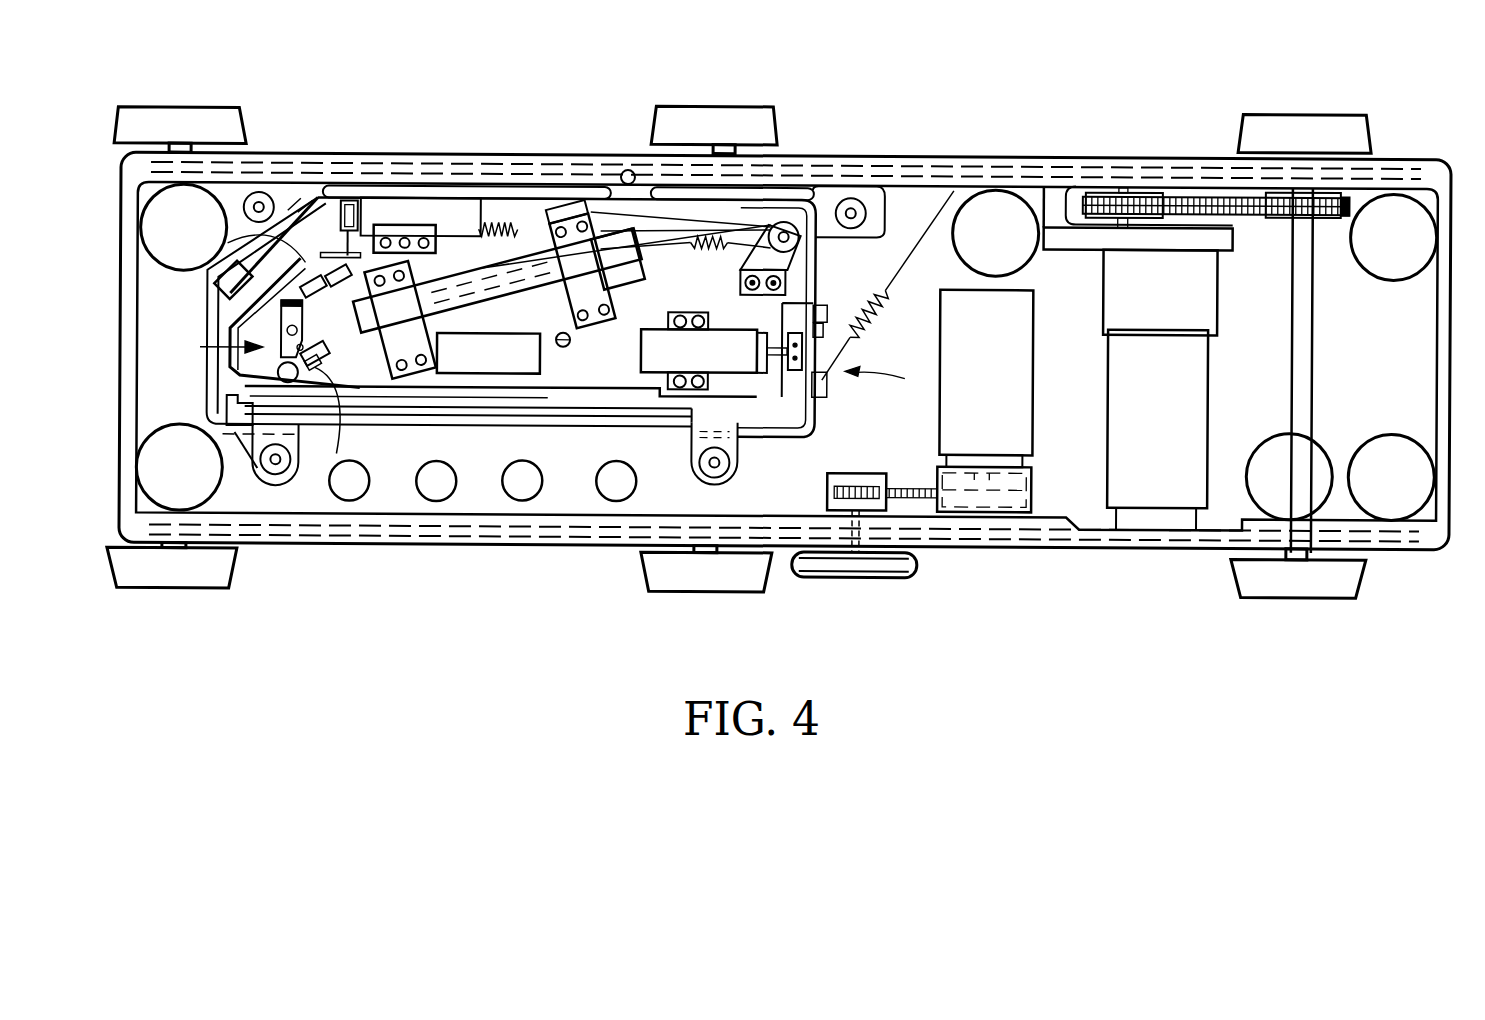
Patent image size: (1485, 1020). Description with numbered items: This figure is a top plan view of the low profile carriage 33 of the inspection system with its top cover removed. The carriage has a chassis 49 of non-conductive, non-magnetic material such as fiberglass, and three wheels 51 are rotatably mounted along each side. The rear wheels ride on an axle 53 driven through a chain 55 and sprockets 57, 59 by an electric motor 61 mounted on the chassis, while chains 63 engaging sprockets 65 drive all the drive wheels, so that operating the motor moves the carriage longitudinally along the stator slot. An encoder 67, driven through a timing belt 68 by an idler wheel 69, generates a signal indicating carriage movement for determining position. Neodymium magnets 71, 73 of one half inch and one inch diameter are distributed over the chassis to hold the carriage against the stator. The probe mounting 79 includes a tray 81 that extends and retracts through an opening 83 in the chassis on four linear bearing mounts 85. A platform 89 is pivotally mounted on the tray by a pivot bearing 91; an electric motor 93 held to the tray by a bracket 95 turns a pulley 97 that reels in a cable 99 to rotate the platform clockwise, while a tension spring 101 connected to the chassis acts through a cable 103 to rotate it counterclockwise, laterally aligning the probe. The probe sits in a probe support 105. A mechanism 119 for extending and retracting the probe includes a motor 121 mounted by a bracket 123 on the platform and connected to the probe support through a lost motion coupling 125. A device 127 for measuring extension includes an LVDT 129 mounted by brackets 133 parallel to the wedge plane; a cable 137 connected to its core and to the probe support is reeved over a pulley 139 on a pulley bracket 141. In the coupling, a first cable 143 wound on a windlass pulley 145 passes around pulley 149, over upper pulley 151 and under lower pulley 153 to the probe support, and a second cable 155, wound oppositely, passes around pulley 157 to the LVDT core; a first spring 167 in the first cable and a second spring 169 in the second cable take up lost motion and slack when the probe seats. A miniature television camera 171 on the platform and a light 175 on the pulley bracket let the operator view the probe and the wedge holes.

The low profile carriage 33 is at (481, 99).
The chassis 49 is at (148, 416).
The wheels 51 is at (1328, 118).
The axle 53 is at (1305, 376).
The chain 55 is at (1212, 200).
The sprocket 57 is at (1102, 222).
The sprocket 59 is at (1283, 230).
The electric motor 61 is at (1115, 377).
The chains 63 is at (1030, 155).
The sprockets 65 is at (1370, 166).
The encoder 67 is at (1018, 422).
The timing belt 68 is at (917, 487).
The idler wheel 69 is at (905, 574).
The neodymium magnets 71 is at (598, 488).
The neodymium magnets 73 is at (152, 231).
The mounting 79 is at (215, 348).
The tray 81 is at (793, 421).
The opening 83 is at (600, 439).
The linear bearing mounts 85 is at (262, 198).
The platform 89 is at (640, 240).
The pivot bearing 91 is at (569, 349).
The electric motor 93 is at (400, 212).
The bracket 95 is at (430, 227).
The pulley 97 is at (352, 203).
The cable 99 is at (343, 200).
The tension spring 101 is at (870, 322).
The cable 103 is at (900, 300).
The probe support 105 is at (236, 314).
The mechanism 119 is at (891, 382).
The motor 121 is at (743, 309).
The bracket 123 is at (690, 397).
The lost motion coupling 125 is at (782, 200).
The device 127 is at (533, 227).
The linear variable differential transformer 129 is at (638, 289).
The brackets 133 is at (448, 345).
The cable 137 is at (352, 335).
The pulley 139 is at (326, 354).
The pulley bracket 141 is at (338, 440).
The first cable 143 is at (692, 200).
The windlass pulley 145 is at (780, 398).
The pulley 149 is at (560, 212).
The upper pulley 151 is at (332, 268).
The lower pulley 153 is at (292, 272).
The second cable 155 is at (640, 258).
The pulley 157 is at (795, 232).
The first spring 167 is at (495, 226).
The second spring 169 is at (693, 250).
The miniature television camera 171 is at (538, 375).
The light 175 is at (278, 374).